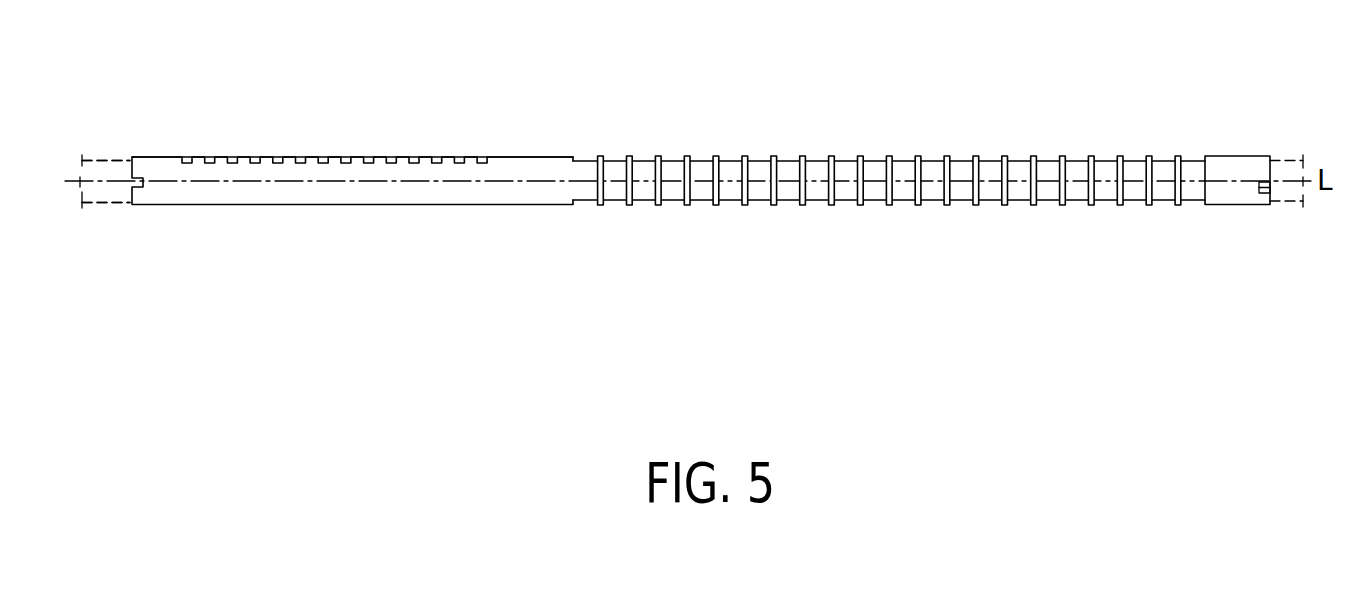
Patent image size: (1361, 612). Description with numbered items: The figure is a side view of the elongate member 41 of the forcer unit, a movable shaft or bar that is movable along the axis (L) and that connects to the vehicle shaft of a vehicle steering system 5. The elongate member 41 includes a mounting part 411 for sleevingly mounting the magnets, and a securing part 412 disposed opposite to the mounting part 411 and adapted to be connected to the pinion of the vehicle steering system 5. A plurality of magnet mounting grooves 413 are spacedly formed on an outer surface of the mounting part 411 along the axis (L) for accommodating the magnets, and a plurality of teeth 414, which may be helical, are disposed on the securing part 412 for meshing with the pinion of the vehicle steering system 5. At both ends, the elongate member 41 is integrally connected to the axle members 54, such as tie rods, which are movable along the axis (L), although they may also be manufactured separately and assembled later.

The vehicle steering system 5 is at (107, 158).
The elongate member 41 is at (701, 173).
The mounting part 411 is at (903, 193).
The securing part 412 is at (352, 173).
The magnet mounting grooves 413 is at (760, 157).
The teeth 414 is at (218, 157).
The axle members 54 is at (107, 206).